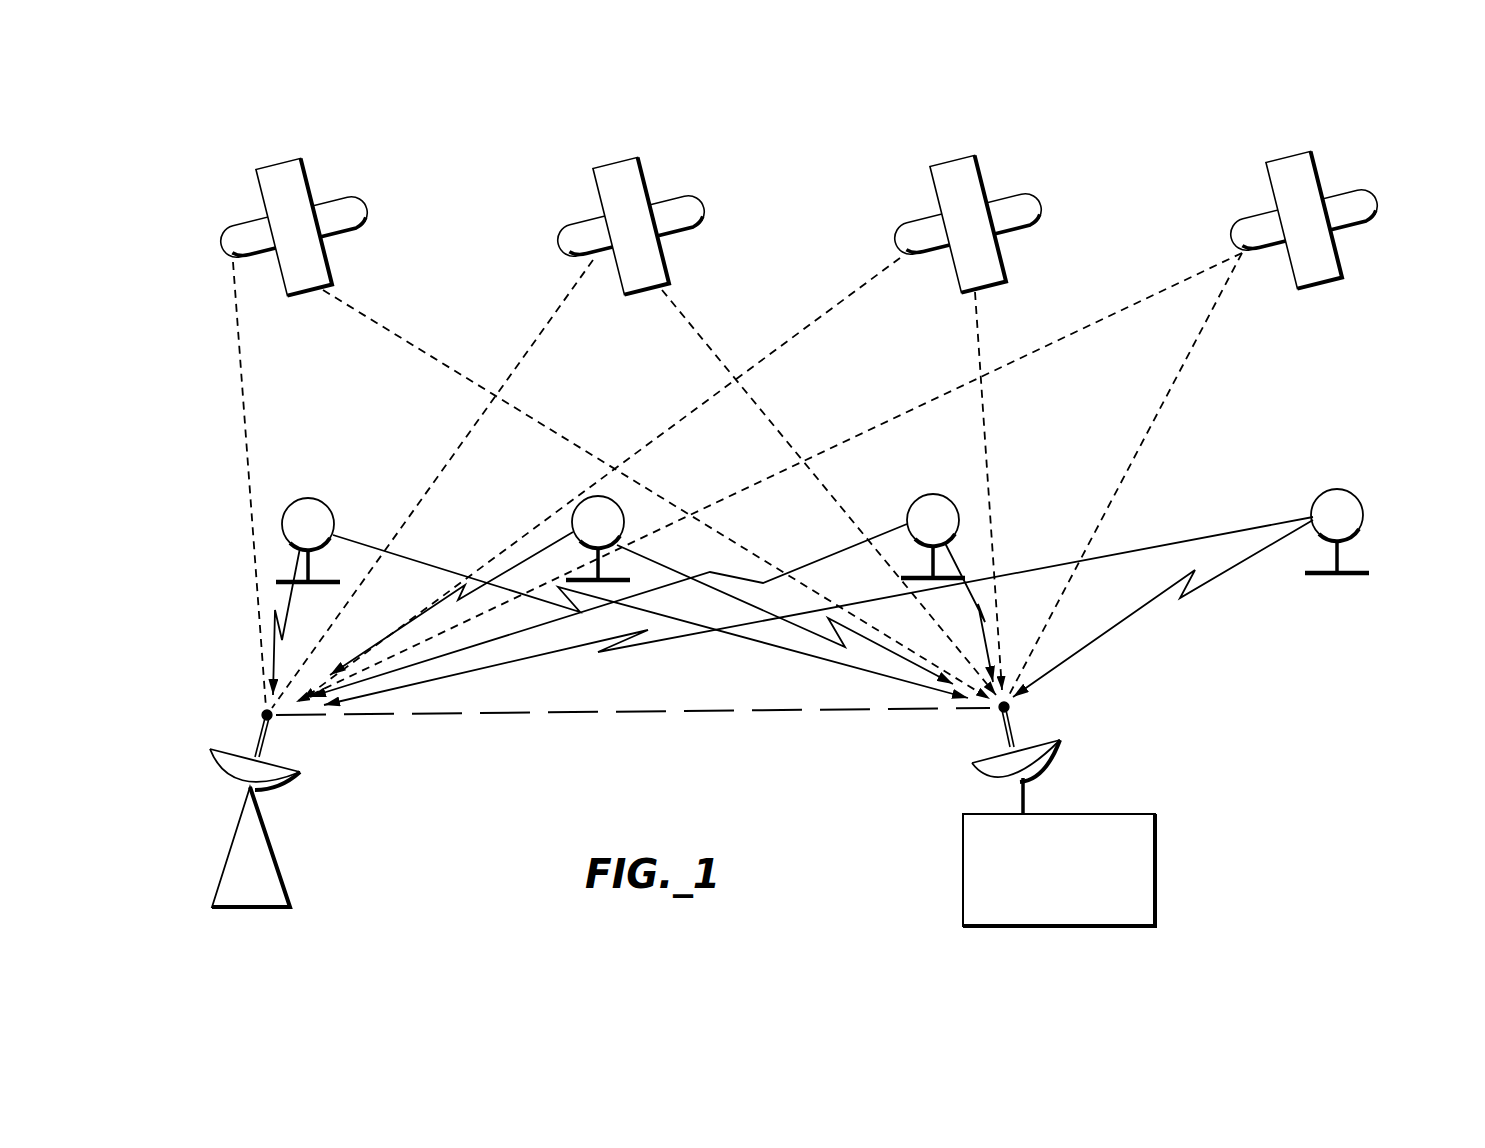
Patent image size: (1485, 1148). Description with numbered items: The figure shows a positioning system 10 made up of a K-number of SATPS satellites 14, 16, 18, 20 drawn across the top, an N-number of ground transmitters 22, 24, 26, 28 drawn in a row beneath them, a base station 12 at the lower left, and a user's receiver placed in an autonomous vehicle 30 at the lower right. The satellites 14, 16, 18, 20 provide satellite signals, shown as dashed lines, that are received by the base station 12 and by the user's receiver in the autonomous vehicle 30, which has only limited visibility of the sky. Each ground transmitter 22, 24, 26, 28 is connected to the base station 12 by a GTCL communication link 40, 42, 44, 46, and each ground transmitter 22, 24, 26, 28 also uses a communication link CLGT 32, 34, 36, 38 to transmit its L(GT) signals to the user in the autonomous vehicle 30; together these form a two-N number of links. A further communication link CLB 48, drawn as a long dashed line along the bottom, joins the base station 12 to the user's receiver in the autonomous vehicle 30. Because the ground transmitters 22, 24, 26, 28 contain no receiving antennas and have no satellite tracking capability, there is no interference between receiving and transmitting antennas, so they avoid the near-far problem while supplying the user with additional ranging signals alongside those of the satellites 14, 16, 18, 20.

The system 10 is at (1203, 690).
The base station 12 is at (278, 858).
The satellite 14 is at (303, 165).
The satellite 16 is at (643, 165).
The satellite 18 is at (980, 163).
The satellite 20 is at (1316, 158).
The ground transmitter 22 is at (312, 500).
The ground transmitter 24 is at (588, 493).
The ground transmitter 26 is at (928, 492).
The ground transmitter 28 is at (1332, 488).
The autonomous vehicle 30 is at (1092, 812).
The communication link CLGT 32 is at (835, 665).
The communication link CLGT 34 is at (658, 563).
The communication link CLGT 36 is at (980, 640).
The communication link CLGT 38 is at (1083, 650).
The GTCL communication link 40 is at (877, 598).
The GTCL communication link 42 is at (548, 636).
The GTCL communication link 44 is at (522, 567).
The GTCL communication link 46 is at (283, 626).
The communication link CLB 48 is at (575, 718).